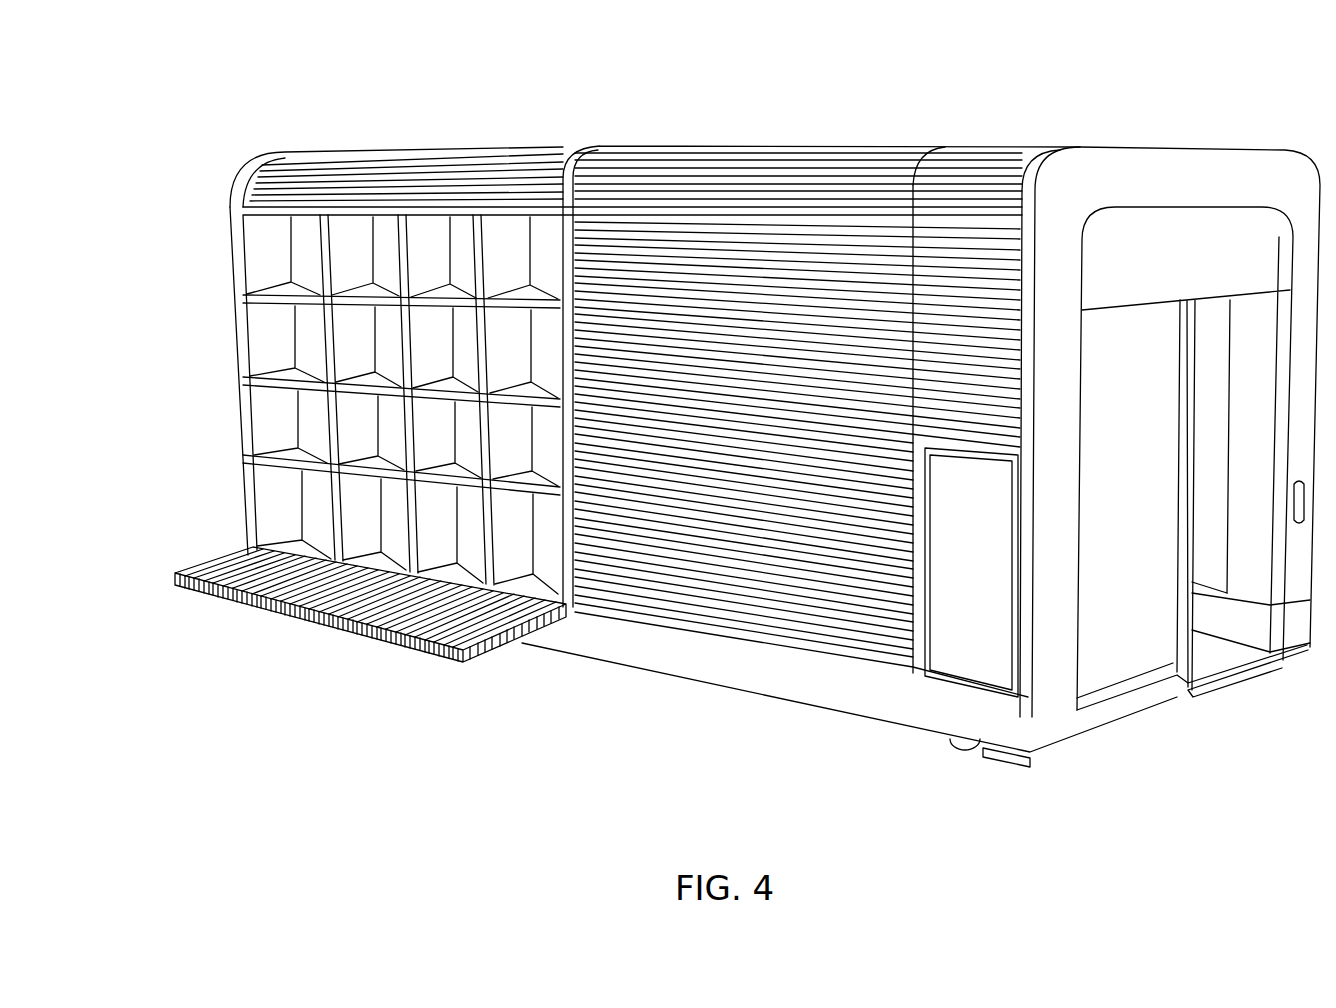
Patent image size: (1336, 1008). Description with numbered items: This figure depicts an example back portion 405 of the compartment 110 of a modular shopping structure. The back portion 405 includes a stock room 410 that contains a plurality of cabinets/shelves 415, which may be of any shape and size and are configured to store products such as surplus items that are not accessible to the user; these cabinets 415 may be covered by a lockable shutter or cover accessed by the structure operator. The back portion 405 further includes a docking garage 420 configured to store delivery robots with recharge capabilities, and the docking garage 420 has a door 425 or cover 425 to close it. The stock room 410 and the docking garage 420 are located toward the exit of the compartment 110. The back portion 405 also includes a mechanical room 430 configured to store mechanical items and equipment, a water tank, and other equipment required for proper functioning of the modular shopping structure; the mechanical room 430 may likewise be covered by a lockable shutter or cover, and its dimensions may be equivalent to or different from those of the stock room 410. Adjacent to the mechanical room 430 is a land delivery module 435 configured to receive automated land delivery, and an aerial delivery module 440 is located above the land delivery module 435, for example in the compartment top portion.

The compartment 110 is at (188, 75).
The back portion 405 is at (237, 308).
The stock room 410 is at (512, 463).
The cabinets/shelves 415 is at (305, 425).
The docking garage 420 is at (295, 510).
The door or cover 425 is at (288, 607).
The mechanical room 430 is at (701, 606).
The land delivery module 435 is at (968, 640).
The aerial delivery module 440 is at (999, 143).